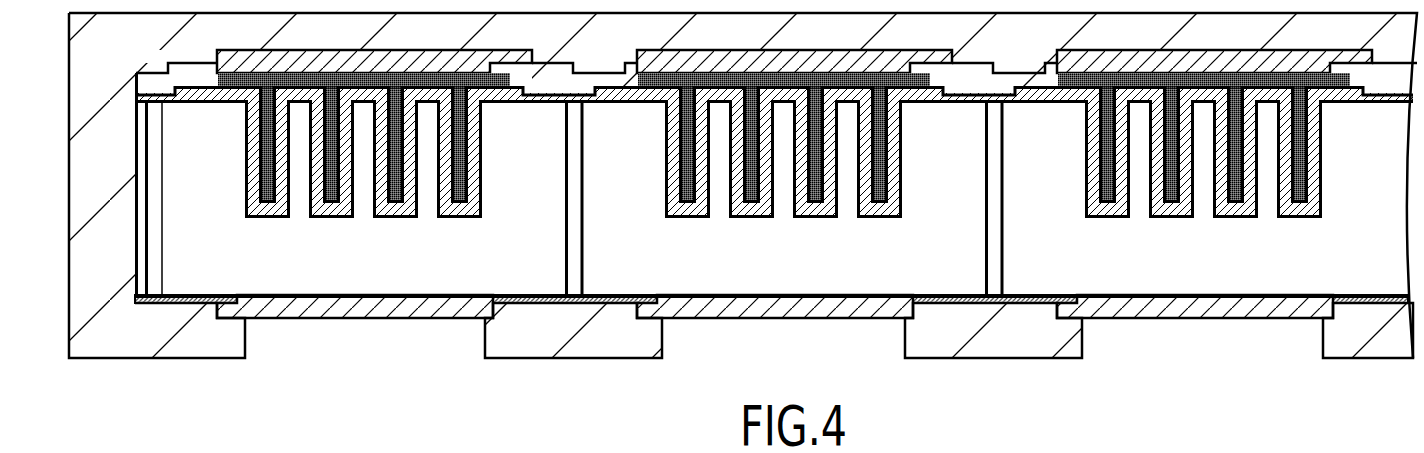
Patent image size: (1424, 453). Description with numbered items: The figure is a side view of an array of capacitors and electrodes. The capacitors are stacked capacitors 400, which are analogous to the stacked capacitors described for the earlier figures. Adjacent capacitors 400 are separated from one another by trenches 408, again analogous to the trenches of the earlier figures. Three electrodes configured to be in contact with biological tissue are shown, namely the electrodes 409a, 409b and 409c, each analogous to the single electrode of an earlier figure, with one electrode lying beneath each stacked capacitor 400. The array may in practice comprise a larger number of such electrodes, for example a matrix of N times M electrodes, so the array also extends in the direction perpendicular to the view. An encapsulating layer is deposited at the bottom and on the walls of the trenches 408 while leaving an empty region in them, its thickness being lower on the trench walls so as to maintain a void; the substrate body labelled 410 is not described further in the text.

The stacked capacitor 400 is at (473, 228).
The trench 408 is at (163, 177).
The electrode 409a is at (343, 319).
The electrode 409b is at (770, 319).
The electrode 409c is at (1190, 319).
The substrate 410 is at (140, 359).